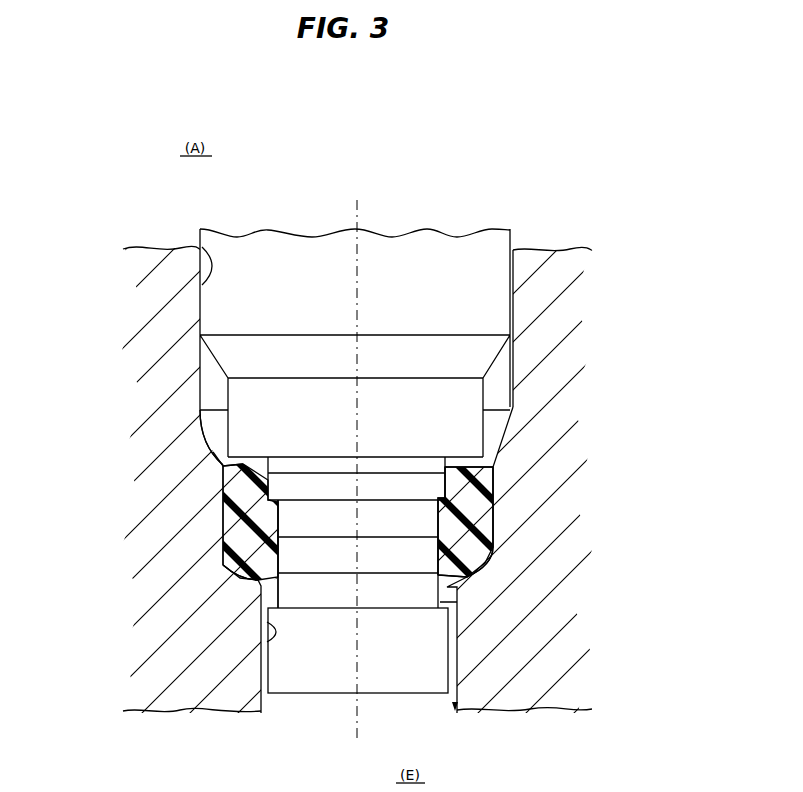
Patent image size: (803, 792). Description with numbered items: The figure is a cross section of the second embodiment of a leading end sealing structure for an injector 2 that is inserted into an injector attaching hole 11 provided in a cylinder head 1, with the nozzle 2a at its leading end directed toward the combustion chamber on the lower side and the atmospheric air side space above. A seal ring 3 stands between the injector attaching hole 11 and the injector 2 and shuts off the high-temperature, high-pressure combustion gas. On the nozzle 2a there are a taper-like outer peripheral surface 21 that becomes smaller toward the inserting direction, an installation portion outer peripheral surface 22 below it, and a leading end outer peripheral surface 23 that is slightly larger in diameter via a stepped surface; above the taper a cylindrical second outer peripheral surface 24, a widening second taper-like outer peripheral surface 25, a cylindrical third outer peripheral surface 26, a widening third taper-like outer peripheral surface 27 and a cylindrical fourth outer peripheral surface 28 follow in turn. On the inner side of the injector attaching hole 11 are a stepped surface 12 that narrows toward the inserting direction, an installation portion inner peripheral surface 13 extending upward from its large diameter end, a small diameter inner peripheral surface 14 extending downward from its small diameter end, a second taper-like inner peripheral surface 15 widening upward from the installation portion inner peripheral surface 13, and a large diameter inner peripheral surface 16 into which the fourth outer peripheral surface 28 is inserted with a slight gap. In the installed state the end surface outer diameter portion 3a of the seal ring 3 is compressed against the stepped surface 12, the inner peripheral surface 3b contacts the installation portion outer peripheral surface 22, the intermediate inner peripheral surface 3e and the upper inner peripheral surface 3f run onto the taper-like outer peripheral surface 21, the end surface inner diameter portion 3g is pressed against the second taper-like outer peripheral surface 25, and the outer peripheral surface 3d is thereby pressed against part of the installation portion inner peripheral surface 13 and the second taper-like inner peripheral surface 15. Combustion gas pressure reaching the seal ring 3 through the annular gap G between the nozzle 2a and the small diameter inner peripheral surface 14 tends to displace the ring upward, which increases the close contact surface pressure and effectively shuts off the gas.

The cylinder head 1 is at (130, 342).
The injector 2 is at (324, 252).
The nozzle 2a is at (330, 700).
The seal ring 3 is at (497, 512).
The end surface outer diameter portion 3a is at (470, 578).
The inner peripheral surface 3b is at (447, 602).
The outer peripheral surface 3d is at (493, 483).
The inner peripheral surface 3e is at (497, 540).
The inner peripheral surface 3f is at (445, 470).
The end surface inner diameter portion 3g is at (497, 460).
The injector attaching hole 11 is at (500, 383).
The stepped surface 12 is at (280, 577).
The installation portion inner peripheral surface 13 is at (223, 547).
The small diameter inner peripheral surface 14 is at (262, 643).
The second taper-like inner peripheral surface 15 is at (220, 410).
The large diameter inner peripheral surface 16 is at (199, 244).
The taper-like outer peripheral surface 21 is at (223, 518).
The installation portion outer peripheral surface 22 is at (217, 552).
The leading end outer peripheral surface 23 is at (267, 667).
The second outer peripheral surface 24 is at (223, 485).
The second taper-like outer peripheral surface 25 is at (222, 466).
The third outer peripheral surface 26 is at (500, 440).
The third taper-like outer peripheral surface 27 is at (515, 296).
The fourth outer peripheral surface 28 is at (547, 250).
The annular gap G is at (458, 716).